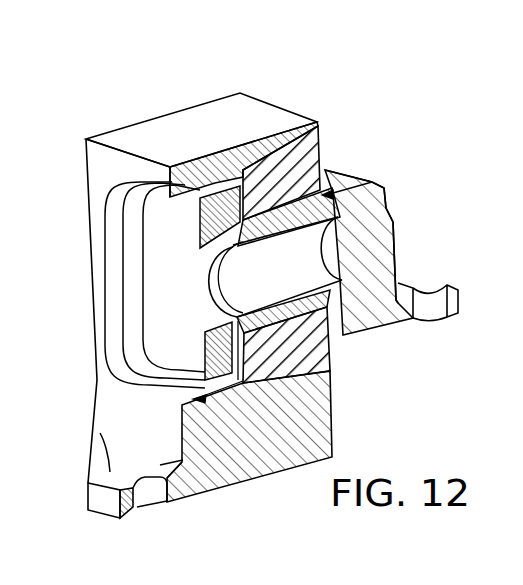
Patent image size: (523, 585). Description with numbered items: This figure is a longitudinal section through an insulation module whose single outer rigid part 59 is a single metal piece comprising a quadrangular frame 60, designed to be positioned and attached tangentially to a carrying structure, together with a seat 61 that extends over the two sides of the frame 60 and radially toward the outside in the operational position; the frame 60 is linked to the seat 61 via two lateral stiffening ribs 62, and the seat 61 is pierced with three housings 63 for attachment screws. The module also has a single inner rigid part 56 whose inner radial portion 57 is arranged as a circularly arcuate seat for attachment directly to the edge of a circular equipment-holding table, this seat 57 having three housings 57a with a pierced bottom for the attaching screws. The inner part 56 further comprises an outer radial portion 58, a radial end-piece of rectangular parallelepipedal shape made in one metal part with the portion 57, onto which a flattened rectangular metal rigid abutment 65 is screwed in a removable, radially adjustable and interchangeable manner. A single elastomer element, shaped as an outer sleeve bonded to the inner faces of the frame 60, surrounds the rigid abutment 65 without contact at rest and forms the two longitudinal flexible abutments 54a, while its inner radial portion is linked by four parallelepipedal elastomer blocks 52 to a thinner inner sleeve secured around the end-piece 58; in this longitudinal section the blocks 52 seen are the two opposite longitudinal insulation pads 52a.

The outer rigid part 59 is at (190, 93).
The lateral stiffening ribs 62 is at (165, 117).
The outer radial portion 58 is at (303, 150).
The longitudinal flexible abutments 54a is at (213, 160).
The parallelepipedal blocks 52 is at (330, 164).
The longitudinal insulation pads 52a is at (268, 178).
The rigid abutment 65 is at (167, 321).
The inner radial portion 57 is at (362, 232).
The inner rigid part 56 is at (389, 172).
The housings 57a is at (430, 297).
The quadrangular frame 60 is at (100, 203).
The seat 61 is at (163, 463).
The housings 63 is at (157, 490).